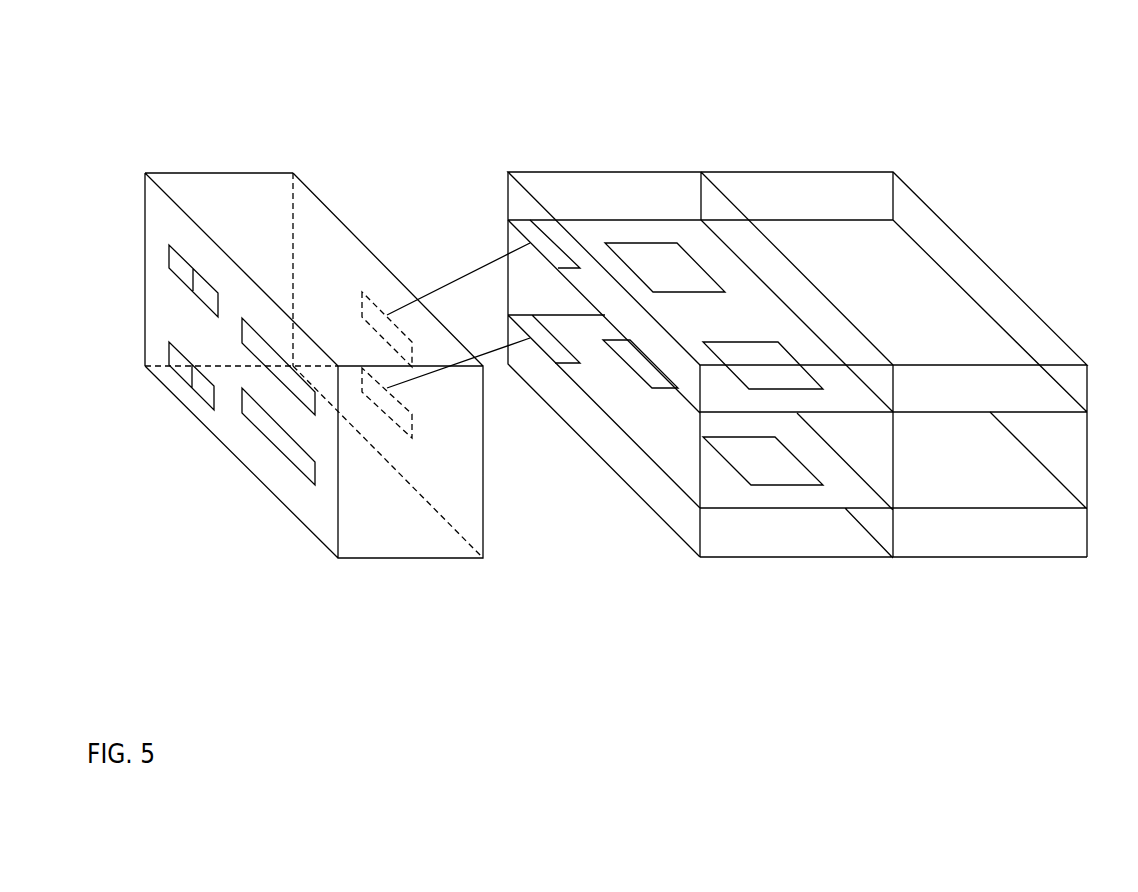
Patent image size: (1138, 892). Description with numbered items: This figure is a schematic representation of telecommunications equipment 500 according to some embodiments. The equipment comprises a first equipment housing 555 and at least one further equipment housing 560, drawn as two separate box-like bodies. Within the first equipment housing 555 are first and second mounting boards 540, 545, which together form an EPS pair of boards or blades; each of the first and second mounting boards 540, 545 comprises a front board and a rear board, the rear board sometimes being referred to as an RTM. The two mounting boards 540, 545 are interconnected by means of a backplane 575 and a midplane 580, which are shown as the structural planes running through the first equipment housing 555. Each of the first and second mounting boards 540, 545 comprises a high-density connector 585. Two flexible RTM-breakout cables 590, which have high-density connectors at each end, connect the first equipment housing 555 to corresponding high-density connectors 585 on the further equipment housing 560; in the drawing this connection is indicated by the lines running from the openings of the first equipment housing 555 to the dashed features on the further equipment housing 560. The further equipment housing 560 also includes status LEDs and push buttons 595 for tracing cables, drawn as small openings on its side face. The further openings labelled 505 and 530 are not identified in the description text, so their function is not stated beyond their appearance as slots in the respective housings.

The telecommunications equipment 500 is at (807, 343).
The slot 505 is at (278, 453).
The opening 530 is at (702, 263).
The first mounting board 540 is at (943, 338).
The second mounting board 545 is at (968, 488).
The first equipment housing 555 is at (632, 171).
The further equipment housing 560 is at (285, 345).
The backplane 575 is at (678, 510).
The midplane 580 is at (800, 262).
The high-density connector 585 is at (520, 216).
The flexible RTM-breakout cables 590 is at (482, 263).
The status LEDs and push buttons 595 is at (182, 268).